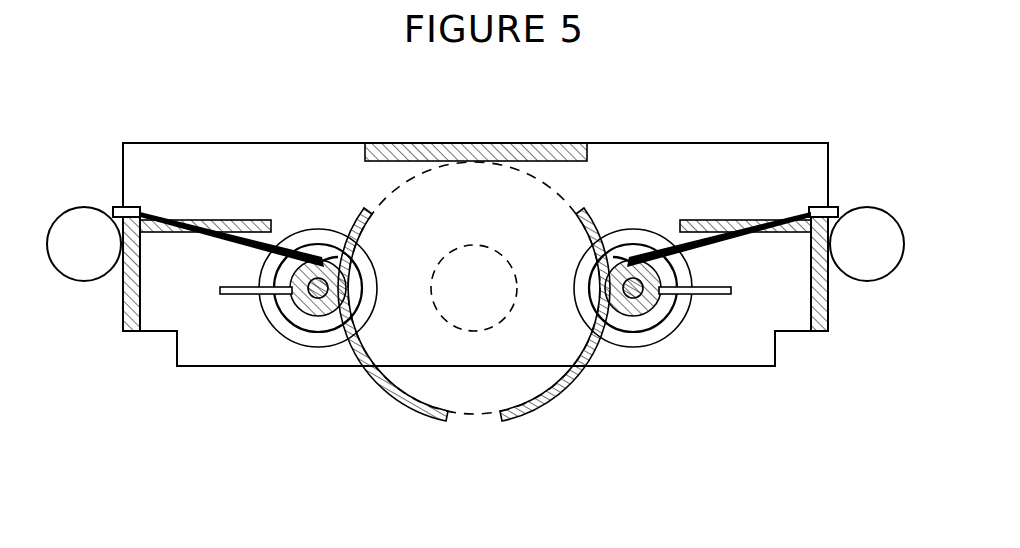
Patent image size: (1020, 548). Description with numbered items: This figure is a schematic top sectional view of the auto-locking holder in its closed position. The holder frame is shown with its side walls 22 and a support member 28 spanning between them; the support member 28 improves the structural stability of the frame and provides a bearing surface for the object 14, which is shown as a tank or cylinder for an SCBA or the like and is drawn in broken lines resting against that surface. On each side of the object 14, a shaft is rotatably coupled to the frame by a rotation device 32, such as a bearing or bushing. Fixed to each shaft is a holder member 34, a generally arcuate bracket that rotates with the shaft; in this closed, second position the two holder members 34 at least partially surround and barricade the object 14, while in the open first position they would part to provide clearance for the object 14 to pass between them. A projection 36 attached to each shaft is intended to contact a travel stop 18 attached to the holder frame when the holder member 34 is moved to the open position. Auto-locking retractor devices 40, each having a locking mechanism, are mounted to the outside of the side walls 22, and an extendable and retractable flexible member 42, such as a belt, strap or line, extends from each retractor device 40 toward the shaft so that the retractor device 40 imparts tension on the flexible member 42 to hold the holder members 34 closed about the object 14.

The object 14 is at (465, 415).
The travel stop 18 is at (165, 233).
The side walls 22 is at (120, 306).
The support member 28 is at (556, 152).
The rotation devices 32 is at (293, 322).
The holder member 34 is at (393, 398).
The projection 36 is at (242, 296).
The auto-locking retractor device 40 is at (76, 228).
The flexible member 42 is at (263, 243).